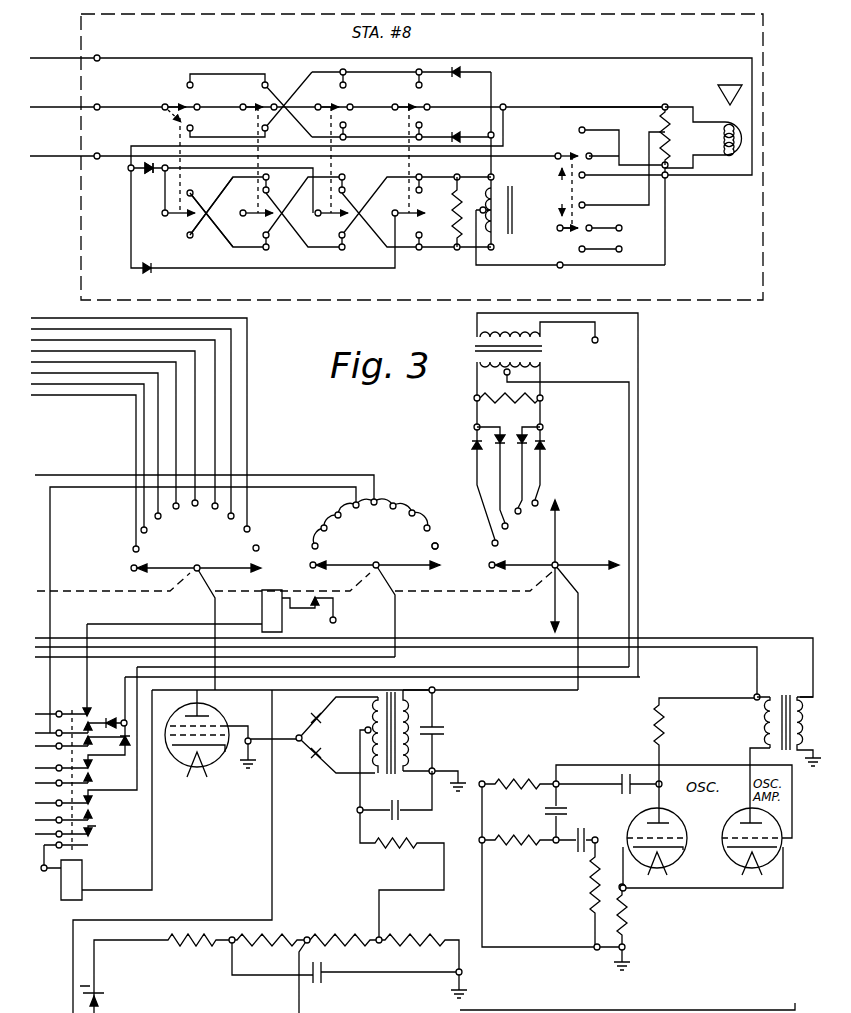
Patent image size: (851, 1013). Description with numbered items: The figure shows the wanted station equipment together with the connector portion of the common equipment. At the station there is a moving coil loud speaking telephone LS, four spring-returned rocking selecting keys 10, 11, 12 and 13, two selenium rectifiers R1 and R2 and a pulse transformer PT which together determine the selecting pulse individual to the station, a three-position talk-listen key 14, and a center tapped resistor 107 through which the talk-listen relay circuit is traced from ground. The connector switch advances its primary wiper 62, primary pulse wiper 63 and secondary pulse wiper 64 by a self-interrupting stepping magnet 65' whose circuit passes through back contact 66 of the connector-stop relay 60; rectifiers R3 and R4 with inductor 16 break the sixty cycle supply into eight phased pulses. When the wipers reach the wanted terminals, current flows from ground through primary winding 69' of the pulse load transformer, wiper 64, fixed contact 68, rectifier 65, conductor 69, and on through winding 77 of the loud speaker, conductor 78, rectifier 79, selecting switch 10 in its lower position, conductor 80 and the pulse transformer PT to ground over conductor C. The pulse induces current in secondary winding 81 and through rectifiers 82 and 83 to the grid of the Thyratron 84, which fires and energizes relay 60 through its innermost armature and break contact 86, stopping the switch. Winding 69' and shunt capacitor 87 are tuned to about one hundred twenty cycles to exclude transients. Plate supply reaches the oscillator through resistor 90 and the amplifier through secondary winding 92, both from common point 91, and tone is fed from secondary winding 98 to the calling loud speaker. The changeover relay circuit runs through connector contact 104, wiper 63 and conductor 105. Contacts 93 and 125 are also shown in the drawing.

The selecting key 10 is at (176, 105).
The selecting key 11 is at (252, 105).
The selecting key 12 is at (330, 105).
The selecting key 13 is at (407, 105).
The talk-listen rocking key 14 is at (558, 151).
The inductor 16 is at (478, 334).
The connector-stop relay 60 is at (87, 873).
The primary wiper 62 is at (175, 567).
The primary pulse wiper 63 is at (360, 556).
The secondary pulse wiper 64 is at (548, 566).
The rectifier 65 is at (526, 482).
The stepping magnet 65' is at (228, 611).
The back contact 66 is at (86, 708).
The fixed contact 68 is at (541, 504).
The conductor 69 is at (566, 513).
The primary winding of pulse load transformer 69' is at (438, 730).
The loud speaker winding 77 is at (726, 137).
The conductor 78 is at (592, 106).
The rectifier 79 is at (147, 172).
The conductor 80 is at (207, 230).
The secondary winding of pulse load transformer 81 is at (372, 718).
The rectifier 82 is at (314, 715).
The rectifier 83 is at (313, 752).
The Thyratron 84 is at (187, 764).
The innermost armature and break contact 86 is at (96, 830).
The shunt capacitor 87 is at (446, 735).
The resistor 90 is at (652, 736).
The common point 91 is at (757, 694).
The secondary winding of transformer 92 is at (765, 735).
The contact 93 is at (92, 805).
The secondary winding of pulse transformer 98 is at (800, 703).
The connector contact 104 is at (415, 551).
The conductor 105 is at (397, 618).
The center tapped resistor 107 is at (660, 125).
The contact 125 is at (251, 531).
The selenium rectifier R1 is at (456, 77).
The selenium rectifier R2 is at (455, 134).
The rectifier R3 is at (106, 716).
The rectifier R4 is at (112, 744).
The pulse transformer PT is at (516, 204).
The conductor C is at (514, 270).
The loud speaking telephone LS is at (716, 92).